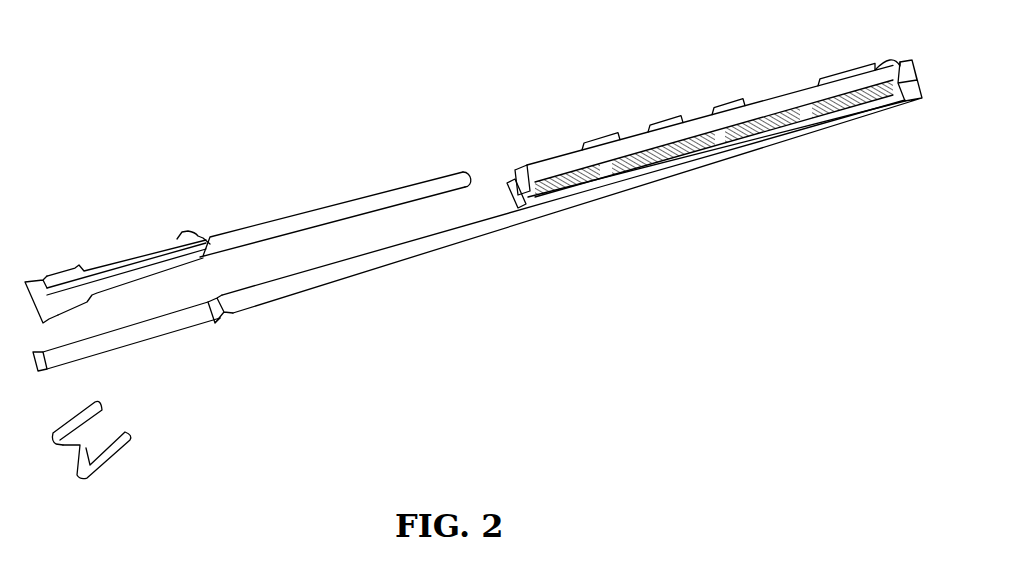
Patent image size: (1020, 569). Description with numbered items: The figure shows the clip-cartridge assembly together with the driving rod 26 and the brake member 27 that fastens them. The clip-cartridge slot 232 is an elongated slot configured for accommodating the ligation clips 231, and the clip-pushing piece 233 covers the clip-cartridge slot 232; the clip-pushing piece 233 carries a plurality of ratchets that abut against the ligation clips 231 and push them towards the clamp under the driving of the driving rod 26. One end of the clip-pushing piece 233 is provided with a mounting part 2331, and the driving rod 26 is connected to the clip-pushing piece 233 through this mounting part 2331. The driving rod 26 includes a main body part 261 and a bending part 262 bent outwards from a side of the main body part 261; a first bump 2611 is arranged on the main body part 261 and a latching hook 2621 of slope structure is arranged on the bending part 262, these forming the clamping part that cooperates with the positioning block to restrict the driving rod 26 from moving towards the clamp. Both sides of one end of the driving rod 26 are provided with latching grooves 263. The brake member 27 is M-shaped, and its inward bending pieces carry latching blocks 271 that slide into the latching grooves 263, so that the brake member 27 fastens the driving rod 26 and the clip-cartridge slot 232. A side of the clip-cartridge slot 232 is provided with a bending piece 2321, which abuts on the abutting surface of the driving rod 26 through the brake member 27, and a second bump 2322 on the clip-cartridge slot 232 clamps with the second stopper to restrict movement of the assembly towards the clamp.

The driving rod 26 is at (468, 177).
The main body part 261 is at (300, 214).
The bending part 262 is at (76, 267).
The first bump 2611 is at (164, 250).
The latching hook 2621 is at (197, 234).
The latching groove 263 is at (46, 276).
The clip-cartridge slot 232 is at (433, 245).
The bending piece 2321 is at (222, 323).
The second bump 2322 is at (55, 366).
The clip-pushing piece 233 is at (648, 126).
The mounting part 2331 is at (523, 211).
The ligation clips 231 is at (620, 183).
The brake member 27 is at (110, 452).
The latching block 271 is at (128, 432).